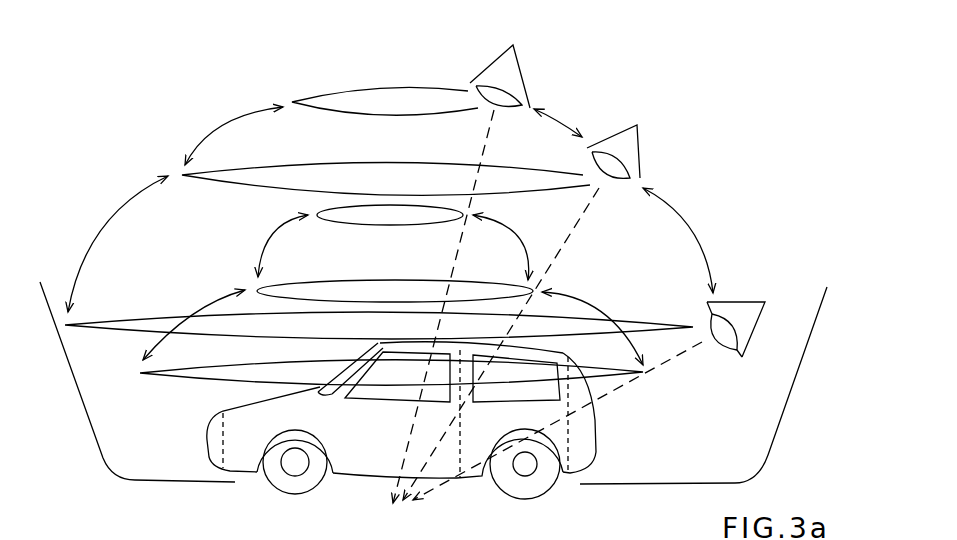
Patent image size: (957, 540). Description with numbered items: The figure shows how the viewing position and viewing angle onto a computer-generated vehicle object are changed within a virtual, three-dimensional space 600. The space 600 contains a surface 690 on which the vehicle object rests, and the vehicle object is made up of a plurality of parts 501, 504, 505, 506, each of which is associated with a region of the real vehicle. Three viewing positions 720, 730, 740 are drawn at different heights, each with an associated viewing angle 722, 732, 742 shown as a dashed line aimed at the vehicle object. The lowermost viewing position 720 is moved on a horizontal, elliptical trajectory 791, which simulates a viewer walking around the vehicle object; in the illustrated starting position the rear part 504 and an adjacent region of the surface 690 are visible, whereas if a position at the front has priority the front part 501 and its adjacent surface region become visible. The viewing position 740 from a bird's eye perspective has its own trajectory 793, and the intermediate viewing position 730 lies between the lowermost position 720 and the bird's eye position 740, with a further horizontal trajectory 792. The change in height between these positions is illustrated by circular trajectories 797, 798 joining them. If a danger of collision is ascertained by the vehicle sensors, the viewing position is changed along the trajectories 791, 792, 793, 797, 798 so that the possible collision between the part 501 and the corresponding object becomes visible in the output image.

The virtual three-dimensional space 600 is at (127, 72).
The surface 690 is at (800, 372).
The trajectory 793 is at (407, 82).
The trajectory 792 is at (300, 168).
The horizontal elliptical trajectory 791 is at (648, 313).
The viewing position 740 is at (519, 54).
The viewing position 730 is at (645, 130).
The viewing position 720 is at (748, 297).
The circular trajectory 798 is at (560, 117).
The circular trajectory 797 is at (680, 222).
The viewing angle 742 is at (480, 146).
The viewing angle 732 is at (581, 218).
The viewing angle 722 is at (676, 363).
The part of the vehicle object 501 is at (204, 430).
The part of the vehicle object 506 is at (372, 432).
The part of the vehicle object 505 is at (508, 430).
The part of the vehicle object 504 is at (589, 432).